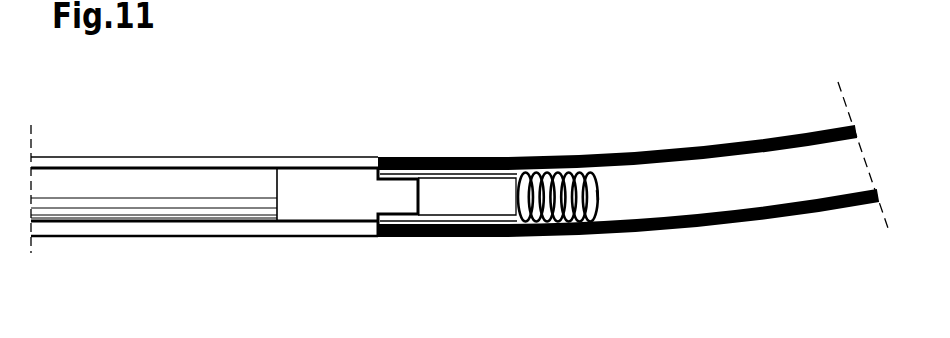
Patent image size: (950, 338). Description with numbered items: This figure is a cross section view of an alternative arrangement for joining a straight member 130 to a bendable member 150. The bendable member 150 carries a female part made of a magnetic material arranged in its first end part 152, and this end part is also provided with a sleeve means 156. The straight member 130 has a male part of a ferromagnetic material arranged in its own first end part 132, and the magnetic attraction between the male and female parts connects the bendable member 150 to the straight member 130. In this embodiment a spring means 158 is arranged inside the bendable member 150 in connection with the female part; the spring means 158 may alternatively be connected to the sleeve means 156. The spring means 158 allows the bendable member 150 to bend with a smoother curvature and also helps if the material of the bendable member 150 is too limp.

The straight member 130 is at (158, 156).
The first end part of the straight member 132 is at (320, 156).
The bendable member 150 is at (770, 137).
The first end part of the bendable member 152 is at (452, 156).
The sleeve means 156 is at (378, 240).
The spring means 158 is at (597, 192).